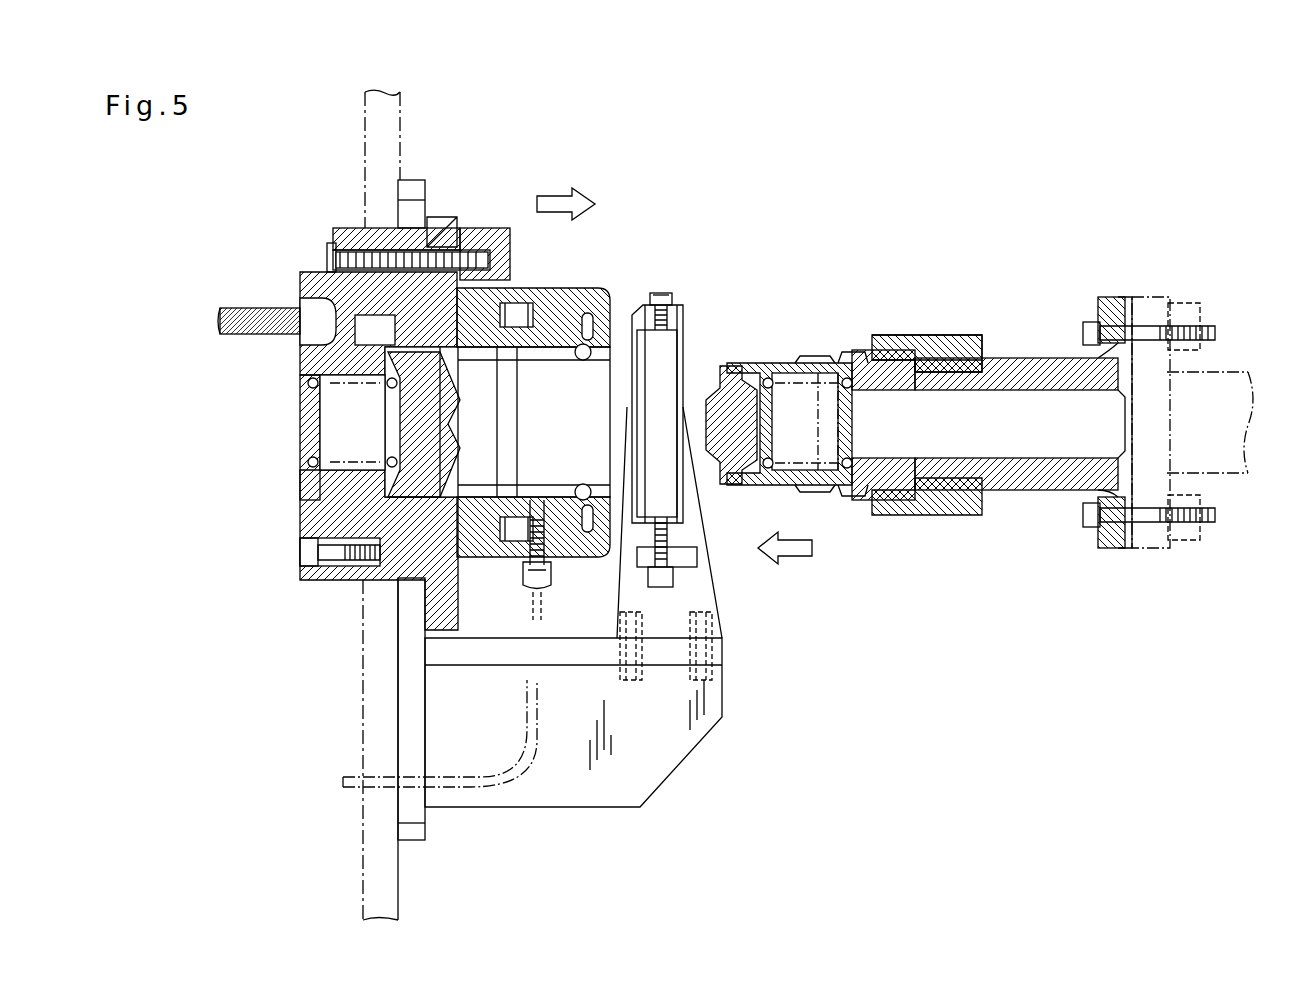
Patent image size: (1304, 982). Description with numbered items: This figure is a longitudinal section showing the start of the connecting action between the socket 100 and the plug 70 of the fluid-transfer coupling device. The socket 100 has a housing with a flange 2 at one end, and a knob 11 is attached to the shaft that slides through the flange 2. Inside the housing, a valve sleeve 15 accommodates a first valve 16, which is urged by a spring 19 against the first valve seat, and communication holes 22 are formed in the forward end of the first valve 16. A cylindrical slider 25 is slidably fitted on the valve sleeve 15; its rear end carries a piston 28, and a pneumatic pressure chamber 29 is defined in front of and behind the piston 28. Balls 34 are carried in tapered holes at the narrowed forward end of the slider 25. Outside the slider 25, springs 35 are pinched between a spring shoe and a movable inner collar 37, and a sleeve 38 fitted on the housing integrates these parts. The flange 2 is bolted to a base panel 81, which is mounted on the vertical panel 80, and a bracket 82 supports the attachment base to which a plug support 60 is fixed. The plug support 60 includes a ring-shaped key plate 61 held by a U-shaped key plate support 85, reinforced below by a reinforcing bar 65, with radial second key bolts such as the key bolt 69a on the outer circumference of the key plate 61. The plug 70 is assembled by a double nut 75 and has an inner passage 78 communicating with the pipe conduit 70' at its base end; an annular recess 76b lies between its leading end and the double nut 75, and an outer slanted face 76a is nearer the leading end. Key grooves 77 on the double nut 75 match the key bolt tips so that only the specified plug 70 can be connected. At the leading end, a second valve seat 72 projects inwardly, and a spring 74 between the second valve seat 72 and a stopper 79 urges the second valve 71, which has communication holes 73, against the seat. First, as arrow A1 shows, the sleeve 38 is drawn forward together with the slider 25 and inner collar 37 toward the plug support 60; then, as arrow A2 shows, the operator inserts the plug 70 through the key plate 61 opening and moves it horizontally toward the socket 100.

The flange 2 is at (441, 226).
The knob 11 is at (483, 230).
The valve sleeve 15 is at (310, 490).
The first valve 16 is at (410, 433).
The spring 19 is at (343, 388).
The communication holes 22 is at (430, 396).
The slider 25 is at (487, 333).
The piston 28 is at (377, 350).
The pneumatic pressure chamber 29 is at (360, 330).
The balls 34 is at (600, 352).
The springs 35 is at (533, 317).
The inner collar 37 is at (553, 320).
The sleeve 38 is at (588, 345).
The plug support 60 is at (688, 302).
The key plate 61 is at (660, 294).
The reinforcing bar 65 is at (690, 557).
The second key bolt 69a is at (666, 294).
The plug 70 is at (950, 460).
The pipe conduit 70' is at (1209, 422).
The second valve 71 is at (718, 410).
The second valve seat 72 is at (736, 368).
The communication holes 73 is at (762, 378).
The spring 74 is at (802, 372).
The double nut 75 is at (886, 350).
The outer slanted face 76a is at (798, 357).
The annular recess 76b is at (848, 353).
The key grooves 77 is at (926, 335).
The inner passage 78 is at (982, 437).
The stopper 79 is at (886, 500).
The vertical panel 80 is at (385, 120).
The base panel 81 is at (410, 812).
The bracket 82 is at (610, 793).
The key plate support 85 is at (698, 600).
The socket 100 is at (634, 166).
The arrow A1 is at (558, 184).
The arrow A2 is at (790, 566).